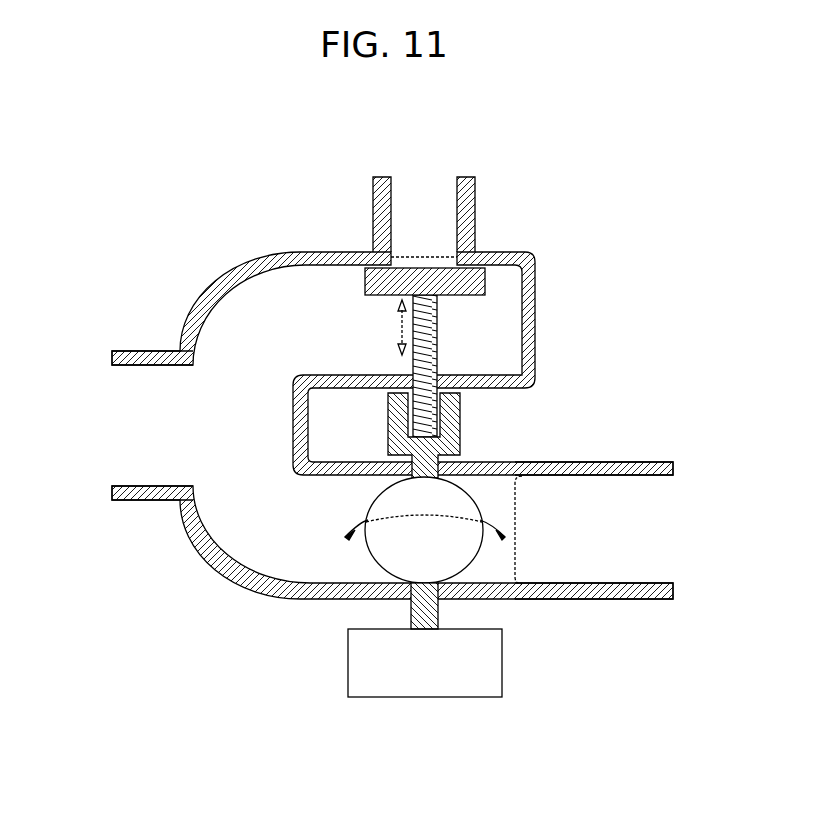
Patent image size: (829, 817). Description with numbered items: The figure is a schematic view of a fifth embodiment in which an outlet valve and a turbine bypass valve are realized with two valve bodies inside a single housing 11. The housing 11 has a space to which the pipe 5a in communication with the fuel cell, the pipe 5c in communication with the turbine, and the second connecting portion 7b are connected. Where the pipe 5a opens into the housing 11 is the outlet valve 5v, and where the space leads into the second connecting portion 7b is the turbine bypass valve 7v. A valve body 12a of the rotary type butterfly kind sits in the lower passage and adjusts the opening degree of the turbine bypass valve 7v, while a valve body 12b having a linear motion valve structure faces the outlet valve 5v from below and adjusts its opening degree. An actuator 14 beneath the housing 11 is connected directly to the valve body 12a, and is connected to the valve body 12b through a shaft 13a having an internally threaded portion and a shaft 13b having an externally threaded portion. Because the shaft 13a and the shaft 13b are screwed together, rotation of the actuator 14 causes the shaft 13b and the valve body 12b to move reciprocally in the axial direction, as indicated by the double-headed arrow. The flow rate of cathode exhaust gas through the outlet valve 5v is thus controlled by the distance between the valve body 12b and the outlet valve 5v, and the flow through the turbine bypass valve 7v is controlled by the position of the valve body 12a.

The housing 11 is at (527, 367).
The pipe 5a is at (425, 223).
The outlet valve 5v is at (425, 255).
The pipe 5c is at (160, 424).
The second connecting portion 7b is at (640, 530).
The turbine bypass valve 7v is at (520, 532).
The valve body 12a is at (388, 501).
The valve body 12b is at (366, 282).
The shaft 13a is at (423, 463).
The shaft 13b is at (423, 348).
The actuator 14 is at (346, 664).